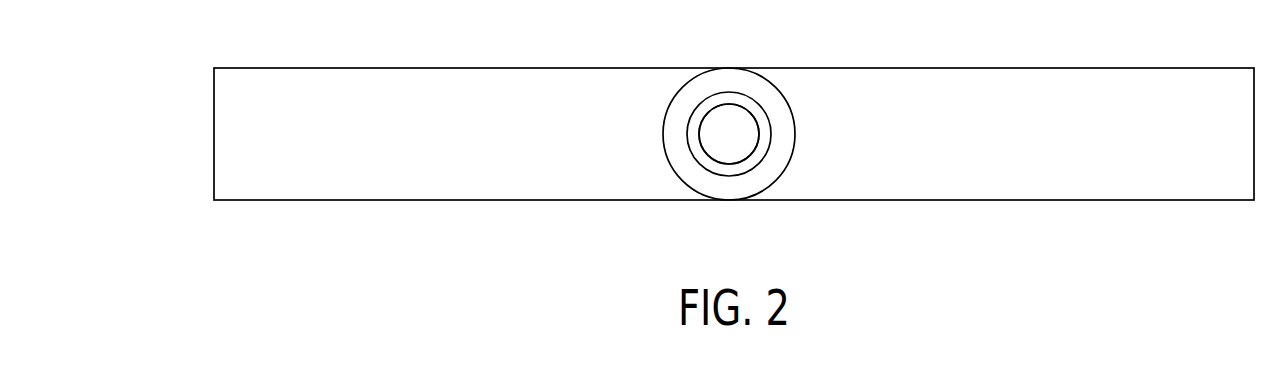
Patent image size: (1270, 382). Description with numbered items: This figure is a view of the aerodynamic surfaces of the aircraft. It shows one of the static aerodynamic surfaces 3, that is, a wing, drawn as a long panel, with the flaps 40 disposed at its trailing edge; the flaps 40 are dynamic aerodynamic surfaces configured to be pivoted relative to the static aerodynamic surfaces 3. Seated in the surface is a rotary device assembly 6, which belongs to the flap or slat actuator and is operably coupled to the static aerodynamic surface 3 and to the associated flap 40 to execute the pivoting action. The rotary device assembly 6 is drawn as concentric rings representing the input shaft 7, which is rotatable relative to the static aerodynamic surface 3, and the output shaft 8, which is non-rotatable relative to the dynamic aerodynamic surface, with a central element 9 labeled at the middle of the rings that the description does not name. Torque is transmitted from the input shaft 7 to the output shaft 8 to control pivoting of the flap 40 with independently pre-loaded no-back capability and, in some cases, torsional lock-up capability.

The static aerodynamic surfaces 3 is at (313, 98).
The rotary device assembly 6 is at (692, 88).
The input shaft 7 is at (712, 157).
The output shaft 8 is at (753, 163).
The central region / sensor 9 is at (734, 127).
The flaps 40 is at (1103, 167).